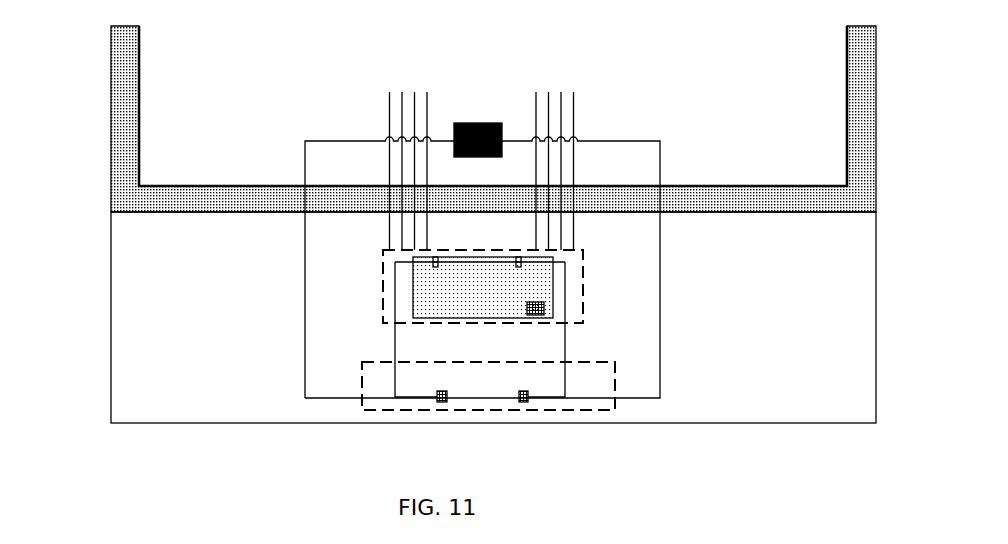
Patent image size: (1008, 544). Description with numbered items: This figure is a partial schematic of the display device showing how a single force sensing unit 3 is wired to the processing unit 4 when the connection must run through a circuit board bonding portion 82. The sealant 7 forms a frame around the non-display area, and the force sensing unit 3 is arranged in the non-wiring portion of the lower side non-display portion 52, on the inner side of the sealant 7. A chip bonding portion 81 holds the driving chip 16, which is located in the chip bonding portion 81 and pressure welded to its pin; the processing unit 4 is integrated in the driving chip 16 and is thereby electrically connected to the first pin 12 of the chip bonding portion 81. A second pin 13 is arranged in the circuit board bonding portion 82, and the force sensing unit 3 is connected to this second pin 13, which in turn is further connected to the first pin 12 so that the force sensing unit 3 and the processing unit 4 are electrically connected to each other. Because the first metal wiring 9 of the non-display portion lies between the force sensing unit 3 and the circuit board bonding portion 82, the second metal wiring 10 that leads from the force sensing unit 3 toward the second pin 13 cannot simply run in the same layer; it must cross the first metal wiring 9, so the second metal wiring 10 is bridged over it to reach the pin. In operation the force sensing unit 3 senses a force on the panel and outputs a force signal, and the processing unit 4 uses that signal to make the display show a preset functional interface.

The sealant 7 is at (117, 130).
The lower side non-display portion 52 is at (110, 320).
The second metal wiring 10 is at (660, 298).
The first metal wiring 9 is at (390, 120).
The force sensing unit 3 is at (495, 123).
The chip bonding portion 81 is at (382, 273).
The driving chip 16 is at (415, 308).
The first pin 12 is at (522, 260).
The processing unit 4 is at (545, 306).
The circuit board bonding portion 82 is at (362, 380).
The second pin 13 is at (528, 400).